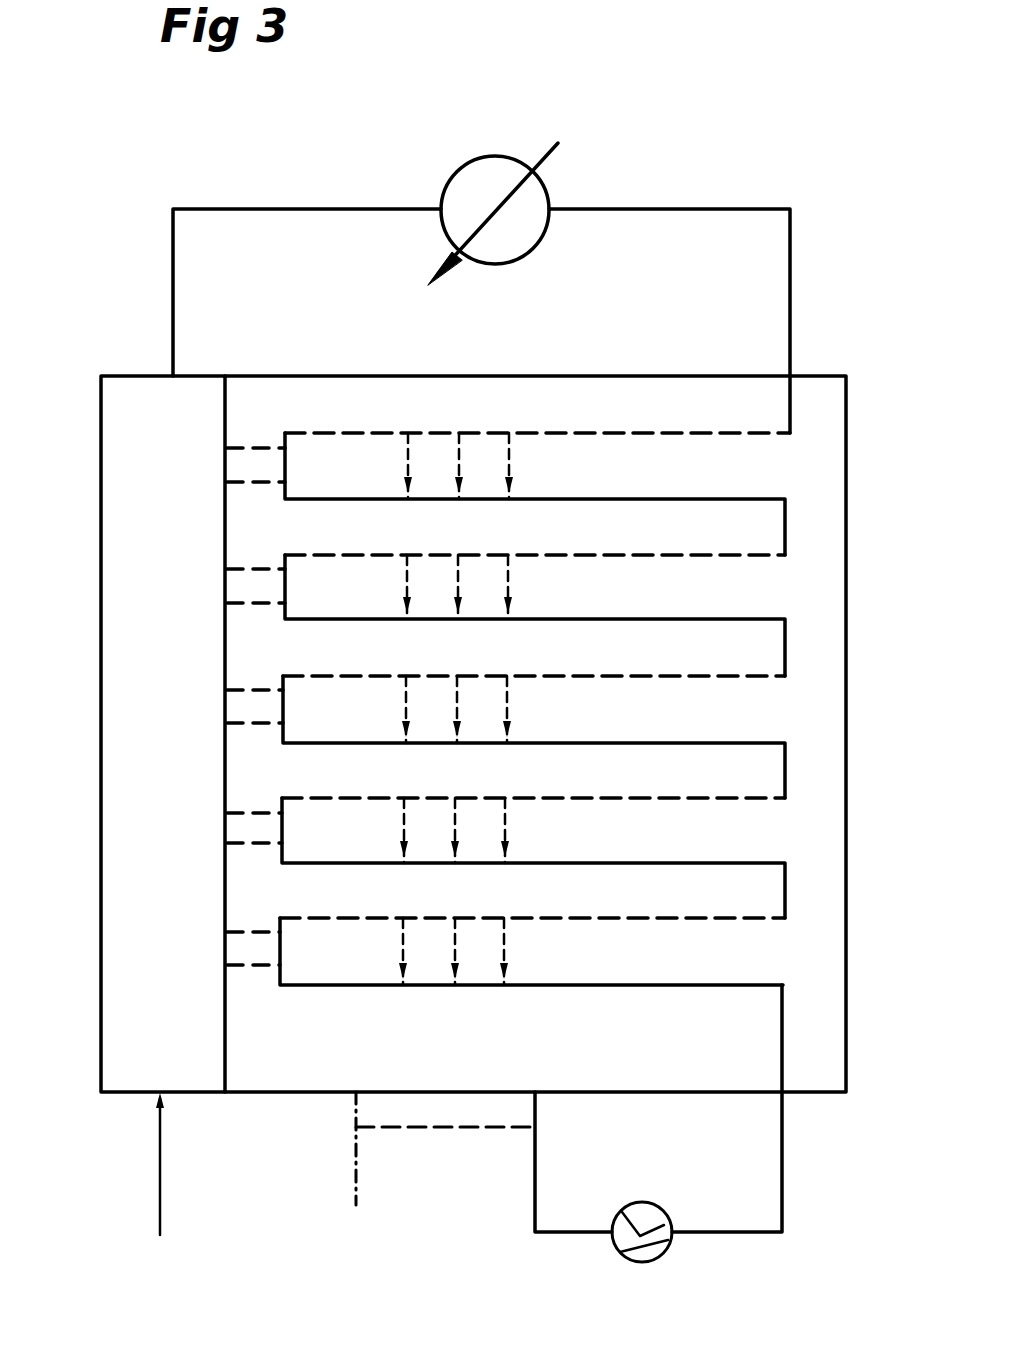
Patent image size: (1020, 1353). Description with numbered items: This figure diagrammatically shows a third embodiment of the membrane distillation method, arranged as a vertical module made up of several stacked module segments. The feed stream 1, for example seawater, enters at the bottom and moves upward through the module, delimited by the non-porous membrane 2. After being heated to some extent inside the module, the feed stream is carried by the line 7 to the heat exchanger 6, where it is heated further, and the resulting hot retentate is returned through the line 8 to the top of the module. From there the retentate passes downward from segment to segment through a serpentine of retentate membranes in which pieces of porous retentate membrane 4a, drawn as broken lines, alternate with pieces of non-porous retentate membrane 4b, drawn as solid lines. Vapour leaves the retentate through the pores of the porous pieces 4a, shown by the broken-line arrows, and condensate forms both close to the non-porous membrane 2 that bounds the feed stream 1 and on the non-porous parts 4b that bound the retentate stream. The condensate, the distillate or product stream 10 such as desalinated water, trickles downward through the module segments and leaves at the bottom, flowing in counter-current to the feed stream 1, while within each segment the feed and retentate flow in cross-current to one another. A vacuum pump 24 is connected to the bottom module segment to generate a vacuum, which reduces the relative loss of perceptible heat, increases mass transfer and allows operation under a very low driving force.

The feed stream 1 is at (160, 1156).
The non-porous membrane 2 is at (225, 662).
The porous retentate membrane 4a is at (558, 436).
The non-porous retentate membrane 4b is at (636, 498).
The heat exchanger 6 is at (533, 200).
The line for feeding the feed stream 7 is at (262, 209).
The line 8 is at (790, 268).
The distillate/condensate/product stream 10 is at (356, 1175).
The vacuum pump 24 is at (655, 1204).